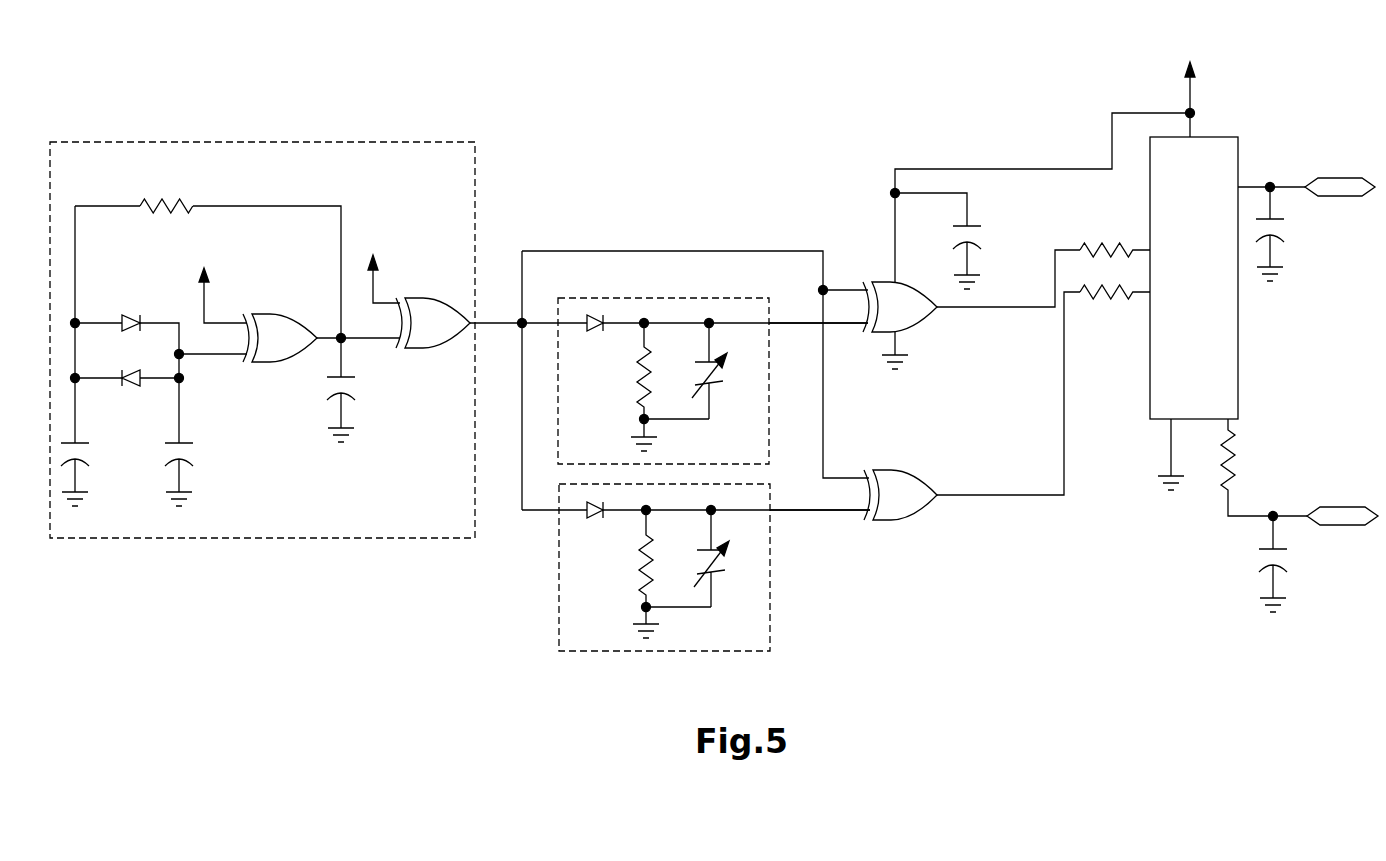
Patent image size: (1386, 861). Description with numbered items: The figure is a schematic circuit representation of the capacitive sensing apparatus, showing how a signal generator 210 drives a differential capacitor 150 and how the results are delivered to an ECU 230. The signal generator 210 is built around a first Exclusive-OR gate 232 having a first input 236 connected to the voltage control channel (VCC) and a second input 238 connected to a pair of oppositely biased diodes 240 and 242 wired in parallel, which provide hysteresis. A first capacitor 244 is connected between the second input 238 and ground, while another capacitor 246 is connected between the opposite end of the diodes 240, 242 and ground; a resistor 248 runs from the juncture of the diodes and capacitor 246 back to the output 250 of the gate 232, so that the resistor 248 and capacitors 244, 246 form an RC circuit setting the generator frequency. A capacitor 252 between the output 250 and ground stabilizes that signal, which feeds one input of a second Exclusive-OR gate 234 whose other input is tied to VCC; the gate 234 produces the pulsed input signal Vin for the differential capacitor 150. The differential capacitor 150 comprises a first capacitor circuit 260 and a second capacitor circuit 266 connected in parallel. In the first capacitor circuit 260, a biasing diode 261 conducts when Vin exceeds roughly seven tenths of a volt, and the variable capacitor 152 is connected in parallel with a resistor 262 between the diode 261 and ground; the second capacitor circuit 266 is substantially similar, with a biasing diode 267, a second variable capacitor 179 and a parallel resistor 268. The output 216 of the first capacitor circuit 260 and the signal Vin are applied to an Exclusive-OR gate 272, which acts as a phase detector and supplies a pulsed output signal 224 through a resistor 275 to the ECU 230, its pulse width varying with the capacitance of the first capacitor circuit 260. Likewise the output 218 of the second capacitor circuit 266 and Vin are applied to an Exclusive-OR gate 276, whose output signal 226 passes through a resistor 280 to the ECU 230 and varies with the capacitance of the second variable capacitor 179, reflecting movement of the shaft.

The differential capacitor 150 is at (815, 131).
The signal generator 210 is at (153, 141).
The resistor 248 is at (165, 200).
The diode 240 is at (131, 316).
The diode 242 is at (131, 388).
The capacitor 246 is at (84, 472).
The first capacitor 244 is at (188, 472).
The first input 236 is at (231, 320).
The second input 238 is at (226, 357).
The first Exclusive-OR gate 232 is at (292, 318).
The output 250 is at (367, 343).
The capacitor 252 is at (352, 403).
The second Exclusive-OR gate 234 is at (448, 302).
The first capacitor circuit 260 is at (600, 298).
The biasing diode 261 is at (593, 330).
The resistor 262 is at (643, 380).
The variable capacitor 152 is at (716, 392).
The output 216 is at (780, 328).
The second capacitor circuit 266 is at (772, 585).
The biasing diode 267 is at (590, 520).
The resistor 268 is at (642, 572).
The second variable capacitor 179 is at (718, 580).
The output 218 is at (784, 515).
The Exclusive-OR gate 272 is at (908, 330).
The Exclusive-OR gate 276 is at (917, 437).
The output signal 224 is at (1005, 307).
The output signal 226 is at (1008, 497).
The resistor 275 is at (1087, 245).
The resistor 280 is at (1100, 300).
The ECU 230 is at (1238, 355).